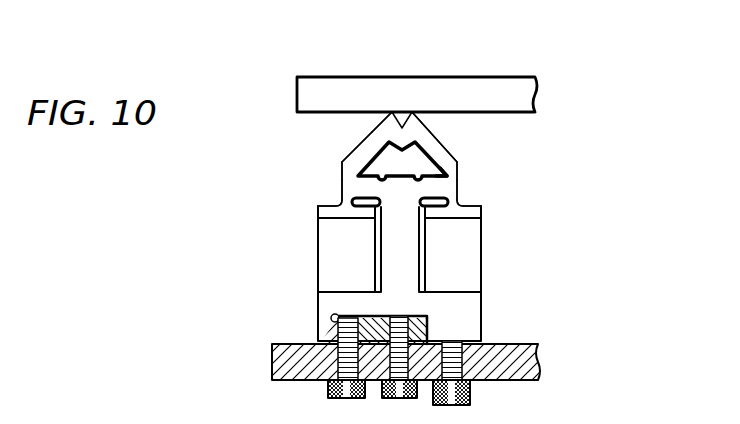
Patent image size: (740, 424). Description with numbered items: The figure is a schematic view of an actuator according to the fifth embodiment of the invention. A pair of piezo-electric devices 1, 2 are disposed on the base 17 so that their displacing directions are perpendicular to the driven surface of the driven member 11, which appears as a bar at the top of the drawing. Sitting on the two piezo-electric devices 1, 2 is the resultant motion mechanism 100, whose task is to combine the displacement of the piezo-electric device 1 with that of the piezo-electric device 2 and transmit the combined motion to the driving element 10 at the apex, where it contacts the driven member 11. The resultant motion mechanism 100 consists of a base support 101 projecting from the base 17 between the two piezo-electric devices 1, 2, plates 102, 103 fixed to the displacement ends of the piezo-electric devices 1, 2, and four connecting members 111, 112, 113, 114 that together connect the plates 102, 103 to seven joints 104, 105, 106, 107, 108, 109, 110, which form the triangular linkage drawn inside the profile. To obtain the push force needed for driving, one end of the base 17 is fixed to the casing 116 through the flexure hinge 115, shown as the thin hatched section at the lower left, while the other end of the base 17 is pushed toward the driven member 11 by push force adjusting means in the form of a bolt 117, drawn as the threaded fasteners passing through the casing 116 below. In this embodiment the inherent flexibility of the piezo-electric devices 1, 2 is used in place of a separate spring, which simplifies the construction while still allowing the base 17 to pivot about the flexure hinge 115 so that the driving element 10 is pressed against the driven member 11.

The piezo-electric device 1 is at (330, 242).
The piezo-electric device 2 is at (474, 255).
The driving element 10 is at (402, 111).
The driven member 11 is at (498, 90).
The base 17 is at (472, 321).
The resultant motion mechanism 100 is at (434, 117).
The base support 101 is at (390, 272).
The plate 102 is at (317, 208).
The plate 103 is at (481, 217).
The joint 104 is at (402, 161).
The joint 105 is at (420, 171).
The joint 106 is at (336, 195).
The joint 107 is at (343, 170).
The joint 108 is at (380, 130).
The joint 109 is at (457, 175).
The joint 110 is at (459, 203).
The connecting member 111 is at (352, 185).
The connecting member 112 is at (445, 192).
The connecting member 113 is at (375, 141).
The connecting member 114 is at (430, 141).
The flexure hinge 115 is at (331, 319).
The casing 116 is at (522, 347).
The bolt 117 is at (471, 396).